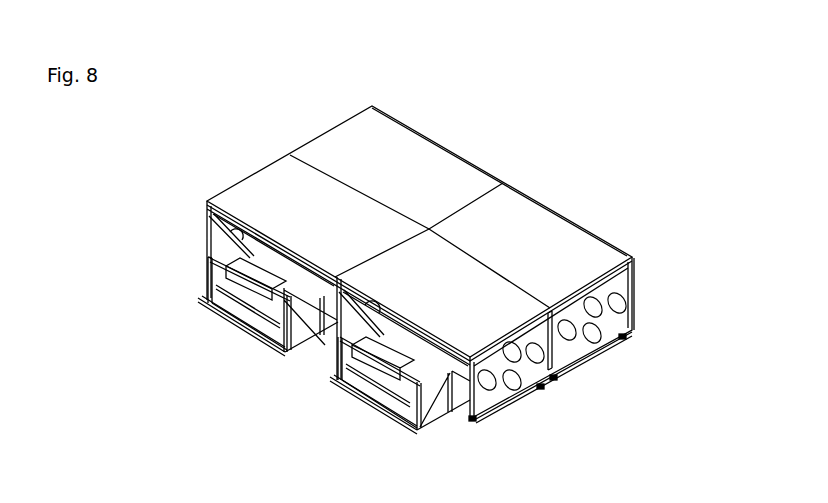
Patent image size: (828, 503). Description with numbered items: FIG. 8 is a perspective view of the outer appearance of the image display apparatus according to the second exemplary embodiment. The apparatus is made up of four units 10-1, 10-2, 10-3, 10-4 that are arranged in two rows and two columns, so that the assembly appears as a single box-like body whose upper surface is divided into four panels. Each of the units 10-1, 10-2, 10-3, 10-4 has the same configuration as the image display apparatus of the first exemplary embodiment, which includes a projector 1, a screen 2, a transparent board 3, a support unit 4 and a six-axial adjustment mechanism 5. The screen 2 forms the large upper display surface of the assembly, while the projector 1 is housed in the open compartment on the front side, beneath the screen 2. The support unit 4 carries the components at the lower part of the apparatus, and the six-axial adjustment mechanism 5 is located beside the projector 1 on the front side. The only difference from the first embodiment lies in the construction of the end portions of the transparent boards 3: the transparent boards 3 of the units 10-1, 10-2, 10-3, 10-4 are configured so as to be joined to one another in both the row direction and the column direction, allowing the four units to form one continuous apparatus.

The unit 10-1 is at (206, 232).
The unit 10-2 is at (536, 392).
The unit 10-3 is at (640, 285).
The unit 10-4 is at (434, 131).
The projector 1 is at (385, 350).
The screen 2 is at (448, 302).
The transparent board 3 is at (330, 320).
The support unit 4 is at (498, 401).
The six-axial adjustment mechanism 5 is at (437, 406).